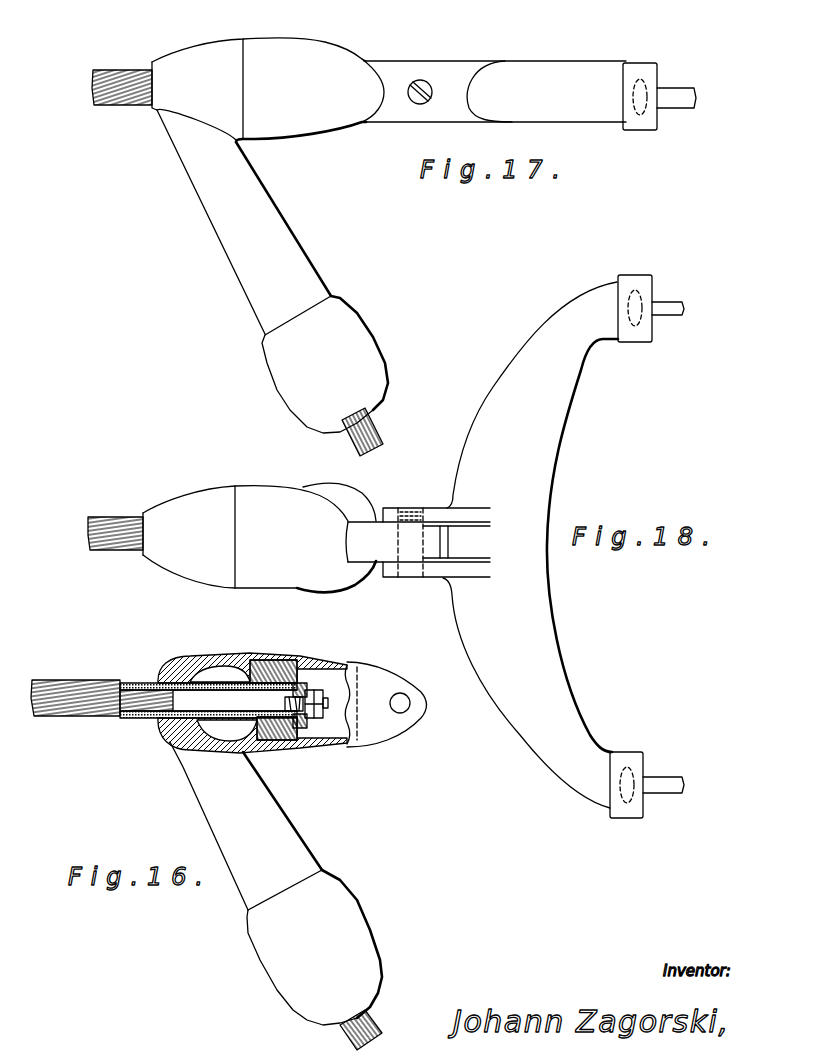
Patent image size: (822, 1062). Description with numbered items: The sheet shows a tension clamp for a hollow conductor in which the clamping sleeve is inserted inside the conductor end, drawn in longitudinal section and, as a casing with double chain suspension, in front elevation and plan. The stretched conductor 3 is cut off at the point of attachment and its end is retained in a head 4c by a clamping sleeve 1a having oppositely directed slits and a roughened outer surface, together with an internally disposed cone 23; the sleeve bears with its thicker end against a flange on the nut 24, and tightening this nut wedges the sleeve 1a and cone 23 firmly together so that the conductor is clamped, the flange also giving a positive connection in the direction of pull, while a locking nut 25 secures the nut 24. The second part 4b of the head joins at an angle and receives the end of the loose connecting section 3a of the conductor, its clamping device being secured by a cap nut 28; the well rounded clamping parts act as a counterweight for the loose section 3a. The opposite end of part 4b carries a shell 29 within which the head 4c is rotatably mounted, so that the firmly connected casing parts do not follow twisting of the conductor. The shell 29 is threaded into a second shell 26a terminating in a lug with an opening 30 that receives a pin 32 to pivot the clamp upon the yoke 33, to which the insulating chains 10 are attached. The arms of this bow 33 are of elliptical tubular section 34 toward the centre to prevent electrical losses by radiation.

In FIG. 17, the conductor 3 is at (137, 99).
In FIG. 18, the conductor 3 is at (124, 505).
In FIG. 16, the conductor 3 is at (99, 718).
In FIG. 17, the loose section of the conductor 3a is at (374, 426).
In FIG. 16, the loose section of the conductor 3a is at (340, 1033).
In FIG. 17, the shell 29 is at (187, 58).
In FIG. 18, the shell 29 is at (200, 481).
In FIG. 16, the shell 29 is at (212, 661).
In FIG. 17, the second shell 26a is at (293, 125).
In FIG. 18, the second shell 26a is at (279, 476).
In FIG. 16, the second shell 26a is at (333, 662).
In FIG. 17, the pin 32 is at (423, 101).
In FIG. 18, the pin 32 is at (396, 578).
In FIG. 17, the yoke 33 is at (571, 118).
In FIG. 18, the yoke 33 is at (558, 674).
In FIG. 18, the elliptical tubular section 34 is at (561, 448).
In FIG. 17, the insulating chains 10 is at (673, 100).
In FIG. 18, the insulating chains 10 is at (663, 316).
In FIG. 17, the second part of the head 4b is at (234, 241).
In FIG. 16, the second part of the head 4b is at (214, 803).
In FIG. 17, the cap nut 28 is at (347, 318).
In FIG. 18, the cap nut 28 is at (343, 588).
In FIG. 16, the cap nut 28 is at (357, 922).
In FIG. 16, the cone 23 is at (187, 707).
In FIG. 16, the head 4c is at (240, 675).
In FIG. 18, the clamping sleeve 1a is at (418, 542).
In FIG. 16, the clamping sleeve 1a is at (281, 668).
In FIG. 16, the nut 24 is at (300, 729).
In FIG. 16, the locking nut 25 is at (316, 720).
In FIG. 16, the opening 30 is at (405, 711).